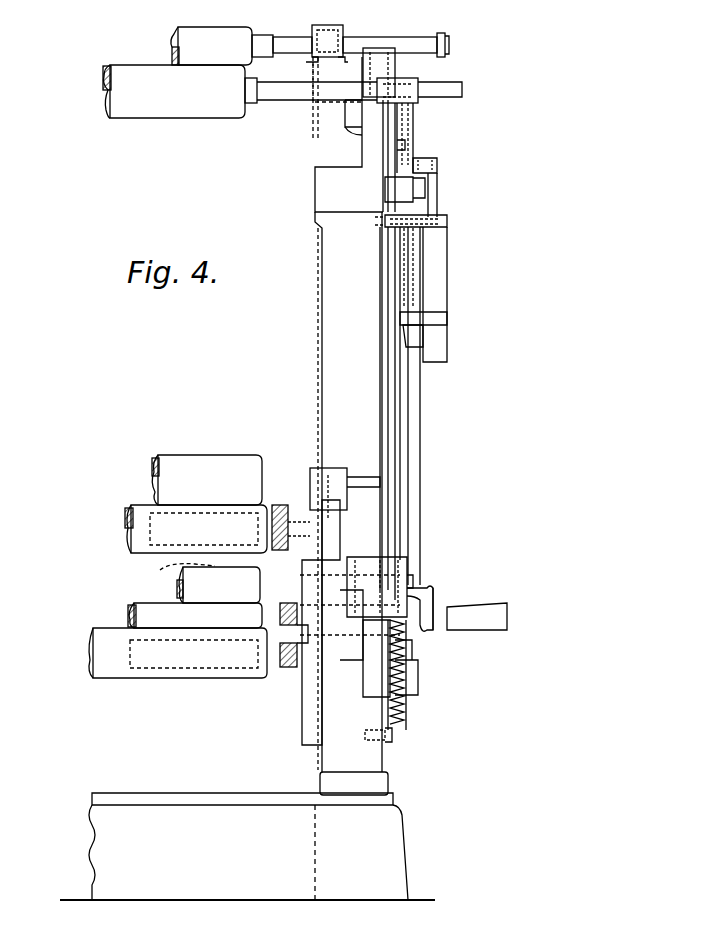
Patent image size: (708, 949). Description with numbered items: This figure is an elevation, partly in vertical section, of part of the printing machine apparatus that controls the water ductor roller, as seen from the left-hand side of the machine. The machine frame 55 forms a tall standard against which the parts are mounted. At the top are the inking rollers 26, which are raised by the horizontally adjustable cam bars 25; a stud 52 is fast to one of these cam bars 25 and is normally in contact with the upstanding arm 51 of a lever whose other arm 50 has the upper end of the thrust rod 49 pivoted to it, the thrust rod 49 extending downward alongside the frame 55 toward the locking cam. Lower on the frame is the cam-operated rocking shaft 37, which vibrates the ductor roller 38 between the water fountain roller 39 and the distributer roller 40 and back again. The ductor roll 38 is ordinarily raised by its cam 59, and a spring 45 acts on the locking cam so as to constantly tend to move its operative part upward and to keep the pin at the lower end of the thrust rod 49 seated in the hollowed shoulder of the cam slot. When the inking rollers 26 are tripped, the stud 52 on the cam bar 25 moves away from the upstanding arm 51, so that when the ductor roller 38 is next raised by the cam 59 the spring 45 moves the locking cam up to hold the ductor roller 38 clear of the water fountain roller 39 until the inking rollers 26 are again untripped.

The inking rollers 26 is at (282, 71).
The cam bars 25 is at (410, 145).
The stud 52 is at (415, 172).
The upstanding arm 51 is at (437, 195).
The arm of lever 50 is at (400, 262).
The machine frame 55 is at (247, 478).
The thrust rod 49 is at (396, 387).
The distributer roller 40 is at (133, 545).
The rocking shaft 37 is at (410, 578).
The ductor roller 38 is at (218, 585).
The water fountain roller 39 is at (128, 612).
The cam 59 is at (368, 688).
The spring 45 is at (402, 722).